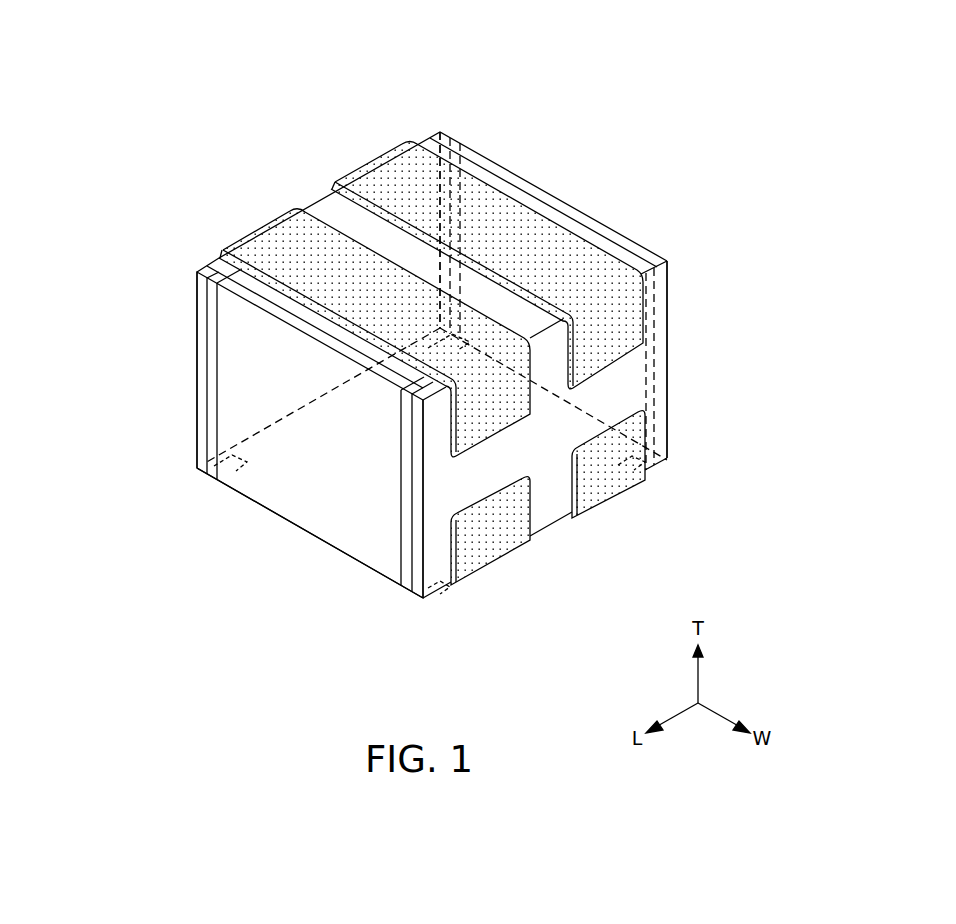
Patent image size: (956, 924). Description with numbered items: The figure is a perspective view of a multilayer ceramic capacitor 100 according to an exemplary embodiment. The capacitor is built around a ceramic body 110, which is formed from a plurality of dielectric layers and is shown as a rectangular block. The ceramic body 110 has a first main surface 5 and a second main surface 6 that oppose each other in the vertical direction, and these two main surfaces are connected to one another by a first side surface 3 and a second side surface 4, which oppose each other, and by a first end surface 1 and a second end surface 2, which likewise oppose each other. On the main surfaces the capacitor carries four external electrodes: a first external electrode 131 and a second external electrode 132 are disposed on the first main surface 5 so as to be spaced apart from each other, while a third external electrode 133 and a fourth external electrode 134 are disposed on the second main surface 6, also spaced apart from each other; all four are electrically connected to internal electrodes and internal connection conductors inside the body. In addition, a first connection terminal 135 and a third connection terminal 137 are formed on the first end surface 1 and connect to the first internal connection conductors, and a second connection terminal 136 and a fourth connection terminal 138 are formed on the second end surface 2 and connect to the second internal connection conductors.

The multilayer ceramic capacitor 100 is at (257, 60).
The ceramic body 110 is at (495, 178).
The first end surface 1 is at (310, 516).
The second end surface 2 is at (610, 230).
The first side surface 3 is at (633, 386).
The second side surface 4 is at (210, 262).
The first main surface 5 is at (557, 525).
The second main surface 6 is at (548, 207).
The first external electrode 131 is at (498, 552).
The second external electrode 132 is at (612, 483).
The third external electrode 133 is at (270, 238).
The fourth external electrode 134 is at (388, 168).
The first connection terminal 135 is at (407, 512).
The second connection terminal 136 is at (637, 255).
The third connection terminal 137 is at (212, 378).
The fourth connection terminal 138 is at (445, 131).